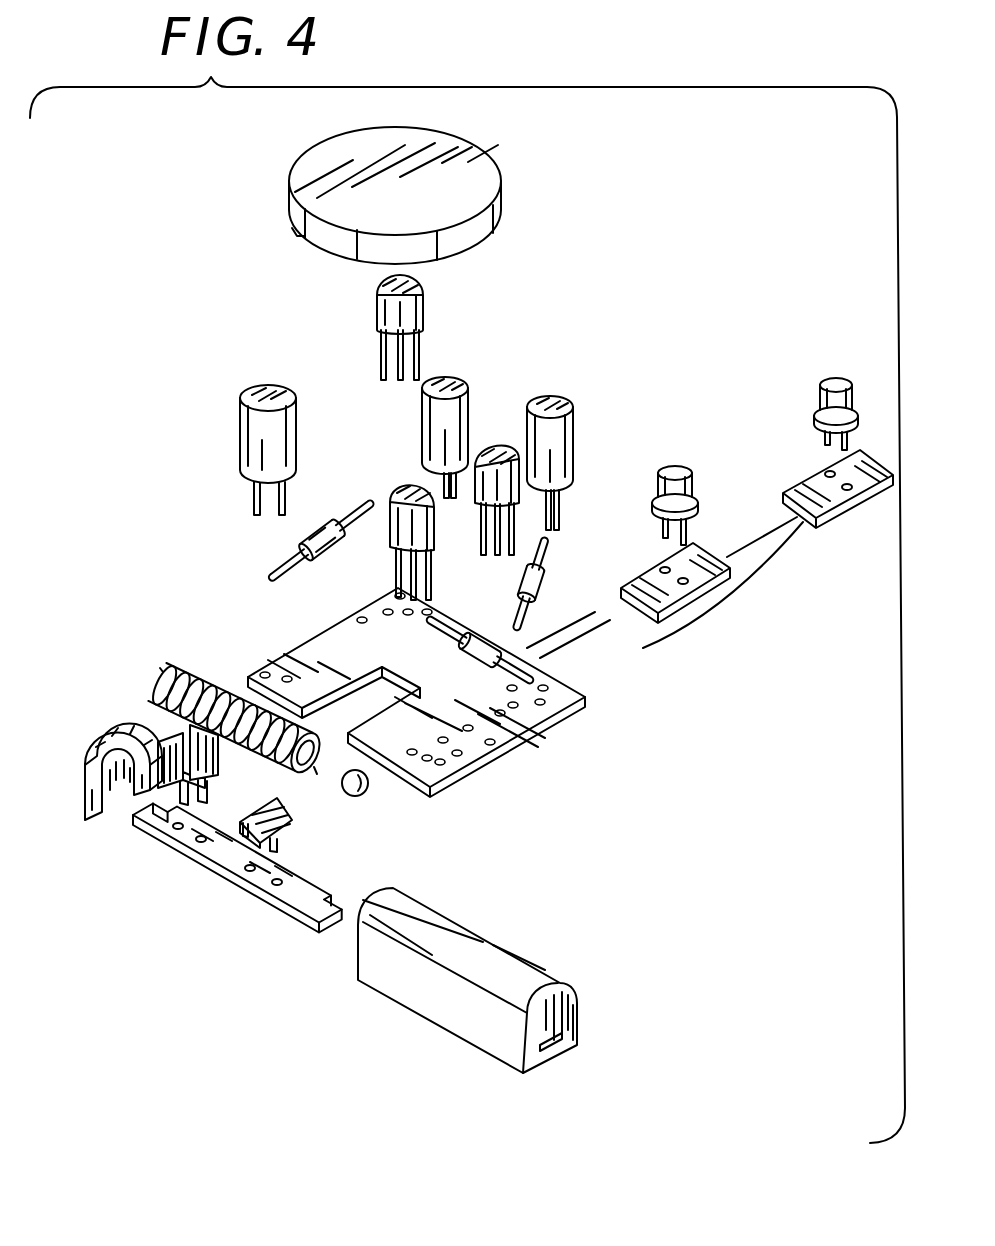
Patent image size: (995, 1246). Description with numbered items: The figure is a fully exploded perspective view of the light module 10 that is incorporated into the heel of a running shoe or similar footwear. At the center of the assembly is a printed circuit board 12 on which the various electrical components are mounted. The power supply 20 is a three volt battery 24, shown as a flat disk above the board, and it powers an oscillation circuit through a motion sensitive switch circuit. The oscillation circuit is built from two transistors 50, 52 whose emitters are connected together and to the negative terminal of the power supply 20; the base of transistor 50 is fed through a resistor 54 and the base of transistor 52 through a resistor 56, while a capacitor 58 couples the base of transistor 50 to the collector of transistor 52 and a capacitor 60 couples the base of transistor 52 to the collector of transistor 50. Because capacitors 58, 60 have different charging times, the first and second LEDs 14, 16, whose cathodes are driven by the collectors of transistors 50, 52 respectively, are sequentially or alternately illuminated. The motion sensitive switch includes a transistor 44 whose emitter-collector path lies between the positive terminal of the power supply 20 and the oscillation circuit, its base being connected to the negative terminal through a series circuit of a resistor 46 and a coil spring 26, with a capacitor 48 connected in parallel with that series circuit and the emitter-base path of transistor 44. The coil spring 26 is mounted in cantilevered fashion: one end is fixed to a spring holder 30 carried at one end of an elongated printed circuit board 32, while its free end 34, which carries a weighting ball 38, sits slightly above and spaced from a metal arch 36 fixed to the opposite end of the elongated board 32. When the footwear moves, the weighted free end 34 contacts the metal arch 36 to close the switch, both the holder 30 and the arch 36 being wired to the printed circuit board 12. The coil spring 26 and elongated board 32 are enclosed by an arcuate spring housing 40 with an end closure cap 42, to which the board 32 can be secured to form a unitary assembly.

The light module 10 is at (134, 452).
The printed circuit board 12 is at (512, 746).
The first LED 14 is at (675, 469).
The second LED 16 is at (832, 384).
The power supply 20 is at (302, 234).
The battery 24 is at (478, 171).
The coil spring 26 is at (191, 660).
The spring holder 30 is at (166, 748).
The elongated printed circuit board 32 is at (263, 902).
The free end of coil spring 34 is at (314, 771).
The metal arch 36 is at (291, 826).
The weighting ball 38 is at (369, 793).
The spring housing 40 is at (425, 1001).
The end closure cap 42 is at (86, 792).
The transistor 44 is at (425, 315).
The resistor 46 is at (478, 652).
The capacitor 48 is at (243, 429).
The transistor 50 is at (400, 490).
The transistor 52 is at (501, 447).
The resistor 54 is at (323, 536).
The resistor 56 is at (540, 586).
The capacitor 58 is at (432, 414).
The capacitor 60 is at (552, 408).